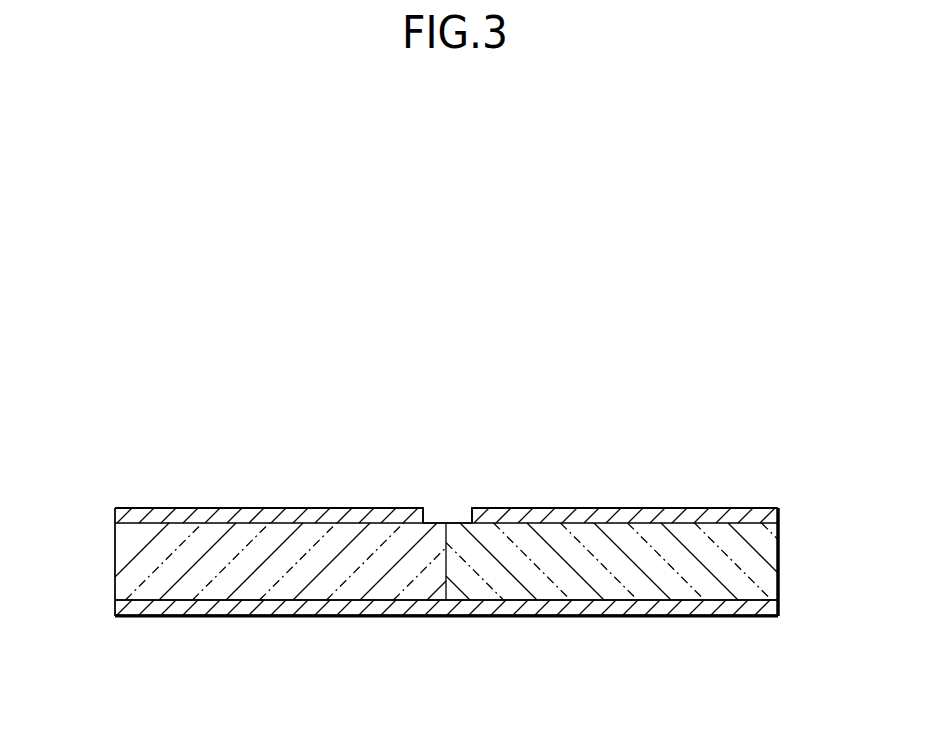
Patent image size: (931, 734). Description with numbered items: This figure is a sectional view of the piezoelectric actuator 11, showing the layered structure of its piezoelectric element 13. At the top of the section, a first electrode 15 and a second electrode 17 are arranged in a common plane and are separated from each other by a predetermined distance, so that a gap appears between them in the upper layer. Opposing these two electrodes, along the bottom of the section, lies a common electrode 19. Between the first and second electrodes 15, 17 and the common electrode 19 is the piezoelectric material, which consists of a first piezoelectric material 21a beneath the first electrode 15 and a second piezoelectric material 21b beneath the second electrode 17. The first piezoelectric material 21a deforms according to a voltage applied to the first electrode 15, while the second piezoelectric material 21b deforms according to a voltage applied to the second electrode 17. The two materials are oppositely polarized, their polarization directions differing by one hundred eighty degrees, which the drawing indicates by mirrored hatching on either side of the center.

The piezoelectric actuator 11 is at (694, 349).
The piezoelectric element 13 is at (560, 476).
The first electrode 15 is at (358, 515).
The second electrode 17 is at (703, 512).
The common electrode 19 is at (494, 605).
The first piezoelectric material 21a is at (127, 560).
The second piezoelectric material 21b is at (778, 553).